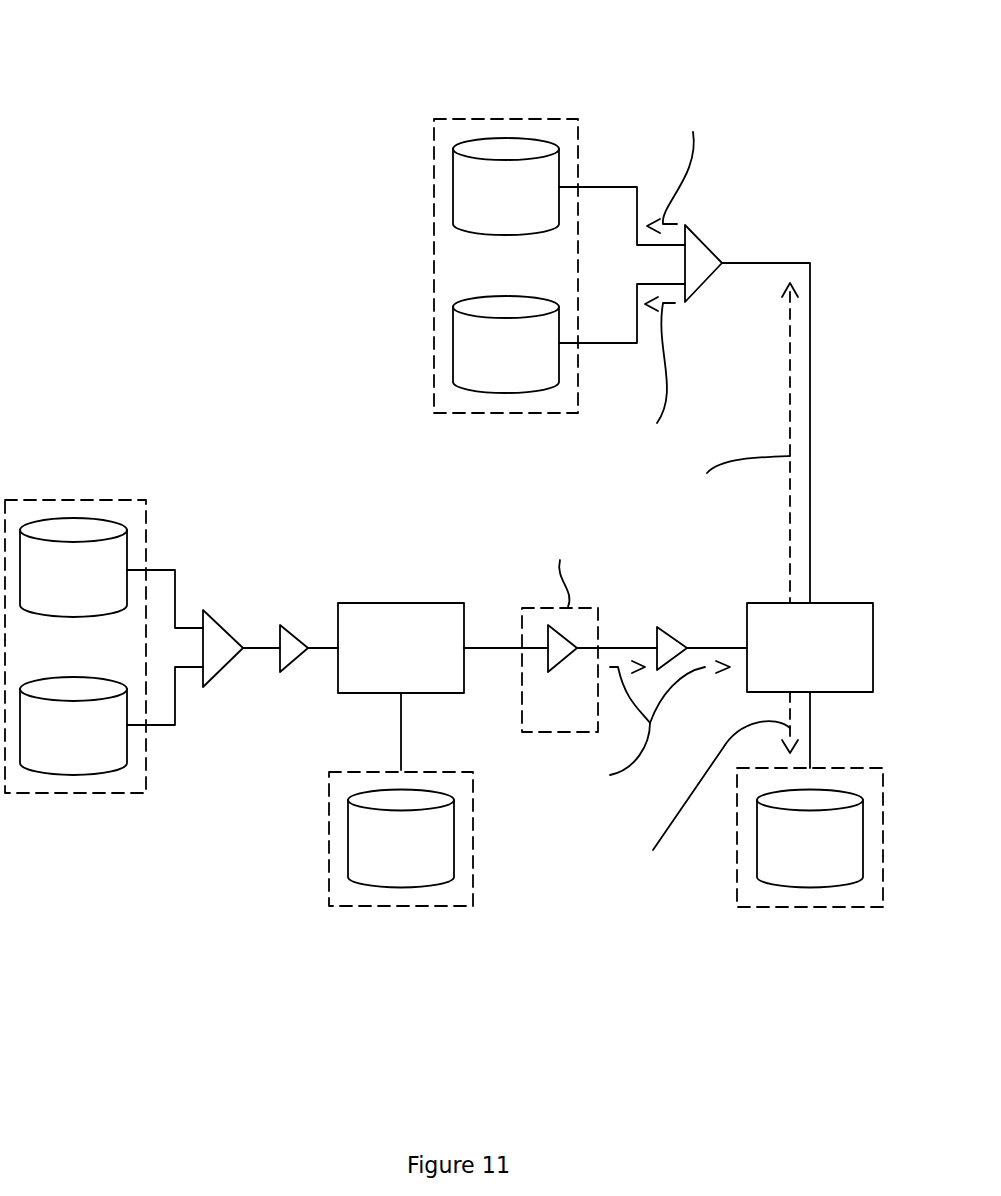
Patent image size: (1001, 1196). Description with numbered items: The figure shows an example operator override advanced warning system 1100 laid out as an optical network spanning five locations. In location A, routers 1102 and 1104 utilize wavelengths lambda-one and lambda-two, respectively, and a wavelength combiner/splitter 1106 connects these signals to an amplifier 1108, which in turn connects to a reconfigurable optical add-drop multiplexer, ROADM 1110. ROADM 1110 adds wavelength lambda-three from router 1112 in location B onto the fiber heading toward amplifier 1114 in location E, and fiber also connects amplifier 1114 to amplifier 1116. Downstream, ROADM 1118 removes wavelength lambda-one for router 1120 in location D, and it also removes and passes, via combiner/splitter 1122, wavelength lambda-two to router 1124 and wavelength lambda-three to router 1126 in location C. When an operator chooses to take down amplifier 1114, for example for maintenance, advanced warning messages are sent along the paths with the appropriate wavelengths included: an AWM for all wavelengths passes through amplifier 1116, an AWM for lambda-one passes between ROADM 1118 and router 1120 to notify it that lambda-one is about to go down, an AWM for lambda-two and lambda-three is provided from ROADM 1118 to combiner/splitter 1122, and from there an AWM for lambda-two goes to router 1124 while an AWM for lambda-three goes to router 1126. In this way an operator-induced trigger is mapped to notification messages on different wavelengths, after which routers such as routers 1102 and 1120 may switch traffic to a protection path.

The operator override advanced warning system 1100 is at (175, 73).
The router 1102 is at (101, 606).
The router 1104 is at (101, 760).
The wavelength combiner/splitter 1106 is at (215, 640).
The amplifier 1108 is at (289, 656).
The reconfigurable optical add-drop multiplexer (ROADM) 1110 is at (428, 675).
The router 1112 is at (429, 875).
The amplifier 1114 is at (561, 653).
The amplifier 1116 is at (676, 643).
The ROADM 1118 is at (837, 675).
The router 1120 is at (838, 875).
The combiner/splitter 1122 is at (691, 256).
The router 1124 is at (534, 221).
The router 1126 is at (534, 380).